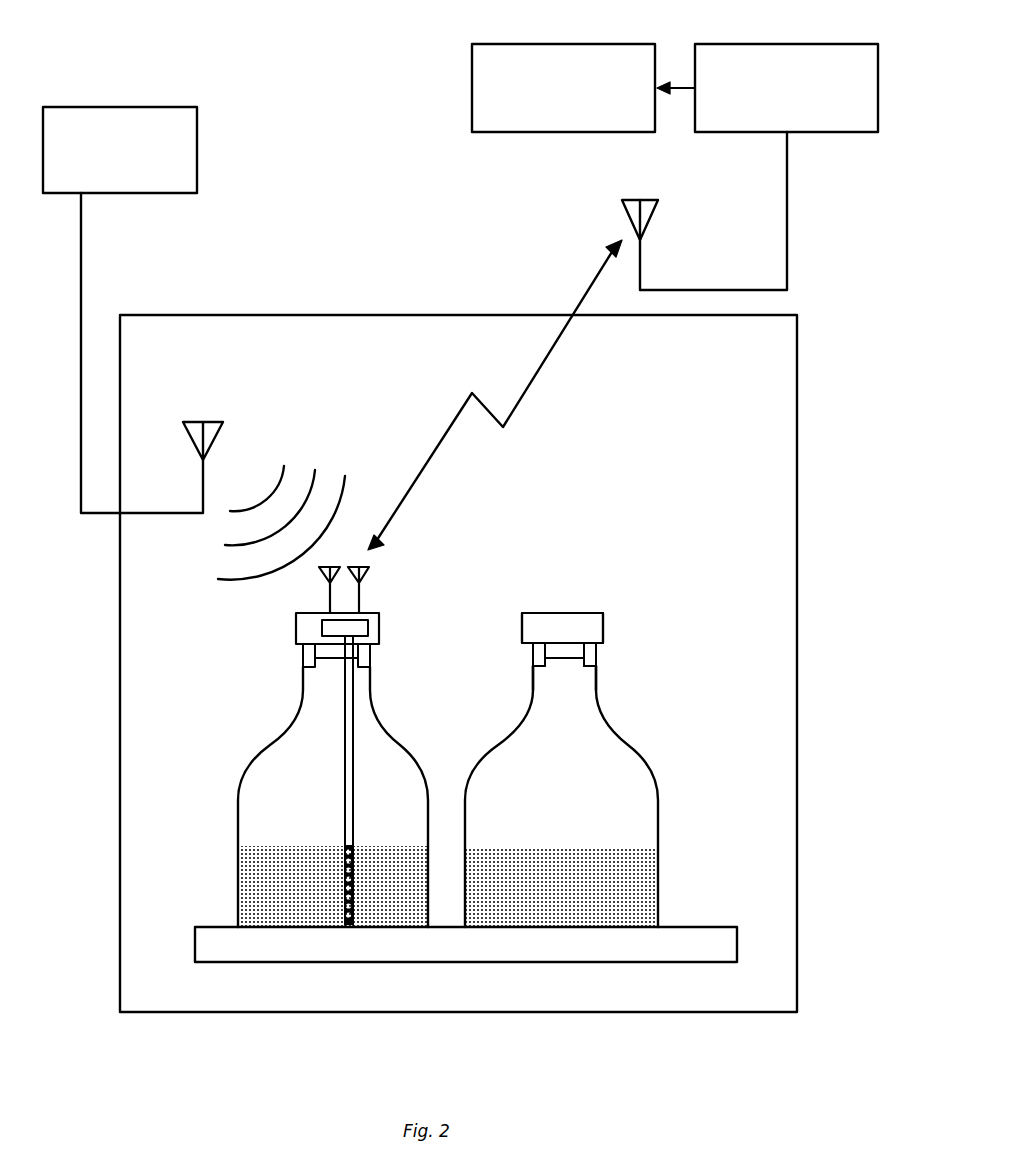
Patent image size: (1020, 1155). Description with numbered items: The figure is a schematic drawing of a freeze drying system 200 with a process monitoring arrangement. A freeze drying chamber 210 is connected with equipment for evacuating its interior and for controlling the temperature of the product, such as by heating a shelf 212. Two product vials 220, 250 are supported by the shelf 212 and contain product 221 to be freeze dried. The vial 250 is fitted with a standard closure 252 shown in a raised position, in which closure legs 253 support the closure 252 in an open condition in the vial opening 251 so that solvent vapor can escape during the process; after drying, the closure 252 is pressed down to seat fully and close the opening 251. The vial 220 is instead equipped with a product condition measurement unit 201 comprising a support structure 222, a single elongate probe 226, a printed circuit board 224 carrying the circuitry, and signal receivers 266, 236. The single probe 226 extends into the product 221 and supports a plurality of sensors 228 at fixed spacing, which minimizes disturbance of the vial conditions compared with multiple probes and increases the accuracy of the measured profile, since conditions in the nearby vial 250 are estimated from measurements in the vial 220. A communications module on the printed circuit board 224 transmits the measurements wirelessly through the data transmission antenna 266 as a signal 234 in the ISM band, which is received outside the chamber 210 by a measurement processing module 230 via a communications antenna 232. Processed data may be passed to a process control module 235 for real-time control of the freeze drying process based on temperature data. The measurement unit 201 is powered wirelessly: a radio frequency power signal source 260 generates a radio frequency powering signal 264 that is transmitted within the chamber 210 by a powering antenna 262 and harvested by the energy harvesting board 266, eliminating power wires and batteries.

The freeze drying system 200 is at (268, 82).
The product condition measurement unit 201 is at (222, 612).
The freeze drying chamber 210 is at (262, 315).
The shelf 212 is at (693, 927).
The product vial 220 is at (262, 730).
The product 221 is at (402, 908).
The support structure 222 is at (380, 632).
The printed circuit board 224 is at (322, 628).
The single elongate probe 226 is at (340, 757).
The sensors 228 is at (344, 871).
The measurement processing module 230 is at (758, 134).
The communications antenna 232 is at (622, 202).
The signal 234 is at (532, 375).
The process control module 235 is at (510, 134).
The signal receiver 236 is at (368, 583).
The product vial 250 is at (488, 730).
The vial opening 251 is at (568, 668).
The closure 252 is at (604, 625).
The closure legs 253 is at (598, 653).
The radio frequency power signal source 260 is at (200, 182).
The powering antenna 262 is at (215, 445).
The radio frequency powering signal 264 is at (230, 562).
The data transmission antenna 266 is at (322, 583).